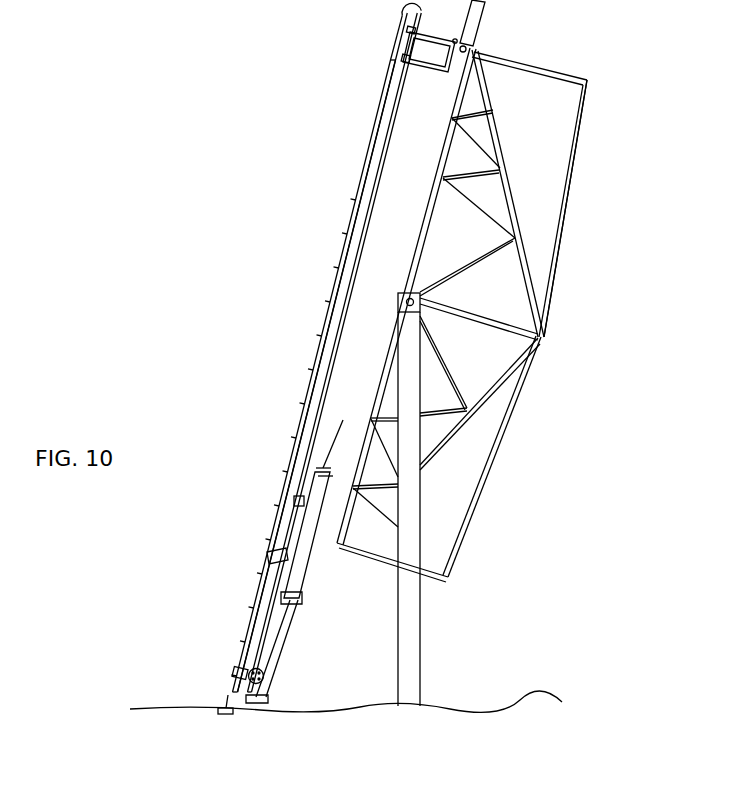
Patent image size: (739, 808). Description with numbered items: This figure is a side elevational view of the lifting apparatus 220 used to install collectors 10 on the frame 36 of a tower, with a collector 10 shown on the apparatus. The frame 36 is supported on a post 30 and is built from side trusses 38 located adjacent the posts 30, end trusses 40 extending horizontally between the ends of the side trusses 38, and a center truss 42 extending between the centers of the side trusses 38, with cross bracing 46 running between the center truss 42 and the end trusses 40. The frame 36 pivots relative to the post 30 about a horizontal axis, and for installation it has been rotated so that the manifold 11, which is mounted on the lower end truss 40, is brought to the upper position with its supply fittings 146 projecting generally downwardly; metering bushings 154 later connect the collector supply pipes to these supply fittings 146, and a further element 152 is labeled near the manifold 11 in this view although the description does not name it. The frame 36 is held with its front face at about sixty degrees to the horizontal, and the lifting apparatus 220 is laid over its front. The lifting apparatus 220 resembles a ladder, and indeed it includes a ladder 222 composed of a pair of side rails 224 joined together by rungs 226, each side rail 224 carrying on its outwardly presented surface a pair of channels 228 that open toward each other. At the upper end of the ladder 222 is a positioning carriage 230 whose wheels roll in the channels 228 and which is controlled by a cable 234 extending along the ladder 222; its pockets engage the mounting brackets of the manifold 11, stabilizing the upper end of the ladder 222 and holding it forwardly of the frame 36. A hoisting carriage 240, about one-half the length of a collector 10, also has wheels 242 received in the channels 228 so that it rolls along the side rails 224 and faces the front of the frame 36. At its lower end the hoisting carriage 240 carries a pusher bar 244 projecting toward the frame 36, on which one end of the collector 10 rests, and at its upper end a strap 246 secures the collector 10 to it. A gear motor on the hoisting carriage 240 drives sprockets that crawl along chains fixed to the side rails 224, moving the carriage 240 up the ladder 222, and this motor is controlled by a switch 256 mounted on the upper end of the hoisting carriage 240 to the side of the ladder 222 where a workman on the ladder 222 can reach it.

The collector 10 is at (300, 560).
The manifold 11 is at (480, 20).
The post 30 is at (418, 655).
The frame 36 is at (468, 315).
The side truss 38 is at (532, 262).
The end truss 40 is at (566, 76).
The center truss 42 is at (513, 350).
The cross bracing 46 is at (583, 192).
The supply fitting 146 is at (466, 52).
The pin 152 is at (455, 38).
The metering bushing 154 is at (343, 421).
The lifting apparatus 220 is at (291, 380).
The ladder 222 is at (322, 318).
The side rail 224 is at (364, 186).
The rung 226 is at (313, 361).
The channel 228 is at (354, 224).
The positioning carriage 230 is at (430, 73).
The cable 234 is at (402, 22).
The hoisting carriage 240 is at (262, 612).
The wheel 242 is at (402, 58).
The pusher bar 244 is at (252, 705).
The strap 246 is at (296, 606).
The switch 256 is at (296, 500).